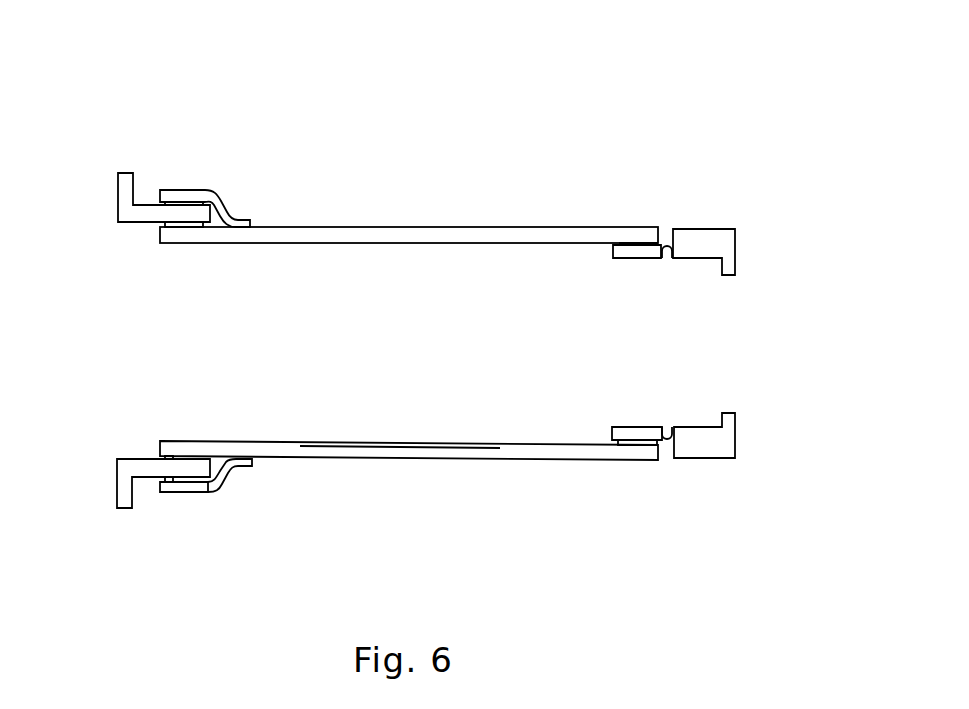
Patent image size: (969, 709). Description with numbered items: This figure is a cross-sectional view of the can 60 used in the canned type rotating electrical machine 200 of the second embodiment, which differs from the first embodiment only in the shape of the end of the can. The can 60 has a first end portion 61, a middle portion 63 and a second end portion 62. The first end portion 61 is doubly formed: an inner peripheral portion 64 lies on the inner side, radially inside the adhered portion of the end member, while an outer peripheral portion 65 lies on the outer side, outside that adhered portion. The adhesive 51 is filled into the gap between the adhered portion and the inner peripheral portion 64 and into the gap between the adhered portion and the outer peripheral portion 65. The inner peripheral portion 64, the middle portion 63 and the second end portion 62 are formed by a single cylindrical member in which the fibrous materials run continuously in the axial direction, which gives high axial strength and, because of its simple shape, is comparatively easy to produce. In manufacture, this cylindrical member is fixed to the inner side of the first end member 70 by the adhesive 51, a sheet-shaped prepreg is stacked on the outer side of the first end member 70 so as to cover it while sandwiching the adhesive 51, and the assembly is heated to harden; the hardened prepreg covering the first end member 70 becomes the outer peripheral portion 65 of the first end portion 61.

The canned type rotating electrical machine 200 is at (570, 110).
The can 60 is at (389, 478).
The inner peripheral portion 64 is at (183, 448).
The middle portion 63 is at (399, 450).
The second end portion 62 is at (634, 450).
The first end portion 61 is at (177, 493).
The outer peripheral portion 65 is at (194, 493).
The adhesive 51 is at (160, 458).
The first end member 70 is at (120, 507).